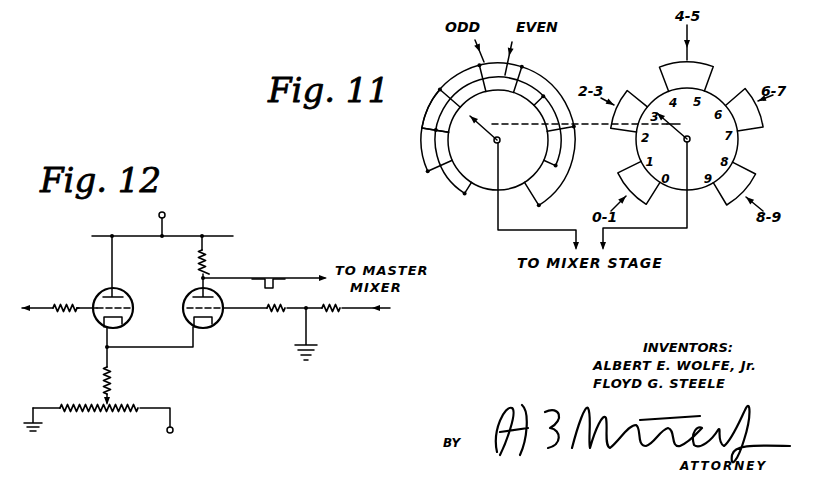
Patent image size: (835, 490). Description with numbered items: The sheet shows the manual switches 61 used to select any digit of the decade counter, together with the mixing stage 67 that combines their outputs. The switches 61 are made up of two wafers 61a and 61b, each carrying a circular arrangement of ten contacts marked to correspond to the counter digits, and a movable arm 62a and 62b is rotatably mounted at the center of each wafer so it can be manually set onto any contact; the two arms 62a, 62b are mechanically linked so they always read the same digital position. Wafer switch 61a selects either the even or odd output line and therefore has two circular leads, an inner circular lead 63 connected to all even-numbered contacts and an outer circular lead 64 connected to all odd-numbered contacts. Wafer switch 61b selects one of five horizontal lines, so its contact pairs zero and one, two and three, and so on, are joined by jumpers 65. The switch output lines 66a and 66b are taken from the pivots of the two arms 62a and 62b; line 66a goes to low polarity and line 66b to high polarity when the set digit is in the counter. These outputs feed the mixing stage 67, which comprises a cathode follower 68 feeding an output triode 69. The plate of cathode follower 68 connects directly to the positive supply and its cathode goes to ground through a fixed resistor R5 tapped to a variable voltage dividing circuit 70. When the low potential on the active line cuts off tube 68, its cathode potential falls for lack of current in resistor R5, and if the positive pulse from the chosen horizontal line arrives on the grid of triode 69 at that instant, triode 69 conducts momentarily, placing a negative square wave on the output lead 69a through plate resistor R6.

In FIG. 11, the manual switches 61 is at (424, 207).
In FIG. 11, the wafer switch 61a is at (479, 136).
In FIG. 11, the wafer switch 61b is at (669, 134).
In FIG. 11, the movable arm 62a is at (492, 127).
In FIG. 11, the movable arm 62b is at (687, 118).
In FIG. 11, the inner circular lead 63 is at (430, 110).
In FIG. 11, the outer circular lead 64 is at (422, 128).
In FIG. 11, the jumpers 65 is at (703, 63).
In FIG. 11, the switch output line 66a is at (563, 231).
In FIG. 12, the switch output line 66a is at (47, 297).
In FIG. 11, the switch output line 66b is at (656, 229).
In FIG. 12, the switch output line 66b is at (353, 310).
In FIG. 12, the mixing stage 67 is at (242, 385).
In FIG. 12, the cathode follower 68 is at (104, 293).
In FIG. 12, the output triode 69 is at (214, 311).
In FIG. 12, the output lead 69a is at (304, 276).
In FIG. 12, the variable voltage dividing circuit 70 is at (95, 412).
In FIG. 12, the fixed resistor R5 is at (123, 373).
In FIG. 12, the plate resistor R6 is at (208, 268).